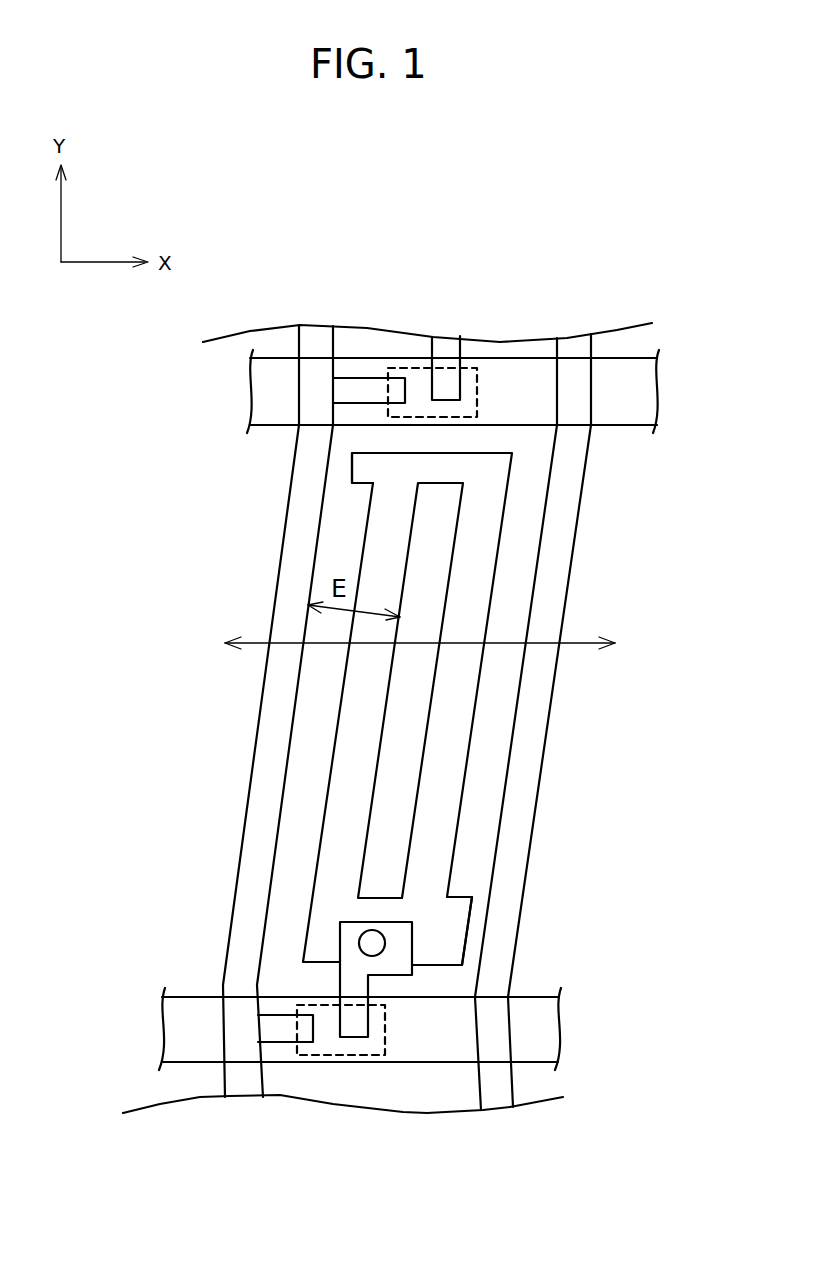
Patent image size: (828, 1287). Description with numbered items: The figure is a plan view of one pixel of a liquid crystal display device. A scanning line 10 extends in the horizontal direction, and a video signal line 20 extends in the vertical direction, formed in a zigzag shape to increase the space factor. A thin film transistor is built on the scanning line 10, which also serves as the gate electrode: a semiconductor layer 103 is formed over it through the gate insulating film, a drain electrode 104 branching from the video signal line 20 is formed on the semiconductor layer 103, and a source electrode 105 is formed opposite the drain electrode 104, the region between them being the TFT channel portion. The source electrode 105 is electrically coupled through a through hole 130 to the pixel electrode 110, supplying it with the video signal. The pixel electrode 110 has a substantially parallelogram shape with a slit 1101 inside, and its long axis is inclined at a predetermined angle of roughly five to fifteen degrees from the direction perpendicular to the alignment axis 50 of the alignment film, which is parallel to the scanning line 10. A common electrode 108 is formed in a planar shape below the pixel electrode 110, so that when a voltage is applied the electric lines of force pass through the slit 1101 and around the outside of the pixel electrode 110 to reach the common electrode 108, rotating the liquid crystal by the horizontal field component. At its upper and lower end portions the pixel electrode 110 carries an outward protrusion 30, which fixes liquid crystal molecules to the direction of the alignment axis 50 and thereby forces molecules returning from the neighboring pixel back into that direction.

The scanning line 10 is at (435, 1053).
The video signal line 20 is at (247, 883).
The protrusion 30 is at (362, 468).
The alignment axis 50 is at (255, 640).
The semiconductor layer 103 is at (327, 1042).
The drain electrode 104 is at (277, 1032).
The source electrode 105 is at (360, 1023).
The common electrode 108 is at (516, 601).
The pixel electrode 110 is at (450, 775).
The slit 1101 is at (410, 707).
The through hole 130 is at (385, 943).